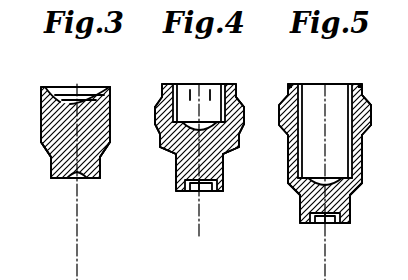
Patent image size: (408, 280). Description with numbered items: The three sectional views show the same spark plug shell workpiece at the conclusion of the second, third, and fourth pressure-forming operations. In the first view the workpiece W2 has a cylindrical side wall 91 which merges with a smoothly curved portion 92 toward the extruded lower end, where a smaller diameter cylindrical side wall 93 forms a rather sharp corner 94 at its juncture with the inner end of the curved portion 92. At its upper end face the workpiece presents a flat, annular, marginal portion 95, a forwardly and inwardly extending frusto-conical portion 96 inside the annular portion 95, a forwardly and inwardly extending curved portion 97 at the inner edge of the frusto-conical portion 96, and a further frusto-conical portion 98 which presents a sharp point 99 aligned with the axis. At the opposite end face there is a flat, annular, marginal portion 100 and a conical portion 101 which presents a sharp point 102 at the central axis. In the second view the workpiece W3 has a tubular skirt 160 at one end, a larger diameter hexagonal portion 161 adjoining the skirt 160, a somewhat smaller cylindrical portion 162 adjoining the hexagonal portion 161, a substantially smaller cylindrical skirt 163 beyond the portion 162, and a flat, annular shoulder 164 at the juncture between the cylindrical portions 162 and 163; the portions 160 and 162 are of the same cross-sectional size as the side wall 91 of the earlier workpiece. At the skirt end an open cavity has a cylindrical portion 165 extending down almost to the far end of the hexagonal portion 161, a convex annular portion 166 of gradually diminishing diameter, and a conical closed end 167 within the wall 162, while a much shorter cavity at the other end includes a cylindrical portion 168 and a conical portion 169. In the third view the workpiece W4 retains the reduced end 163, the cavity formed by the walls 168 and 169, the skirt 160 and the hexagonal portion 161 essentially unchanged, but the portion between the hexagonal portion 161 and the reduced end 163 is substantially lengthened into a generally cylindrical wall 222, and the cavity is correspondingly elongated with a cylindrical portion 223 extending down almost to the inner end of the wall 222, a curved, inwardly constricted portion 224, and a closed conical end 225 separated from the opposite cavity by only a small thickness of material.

In FIG. 3, the cylindrical side wall 91 is at (111, 128).
In FIG. 3, the smoothly curved portion 92 is at (106, 150).
In FIG. 3, the smaller diameter cylindrical side wall 93 is at (53, 176).
In FIG. 3, the sharp corner 94 is at (47, 156).
In FIG. 3, the flat annular marginal portion 95 is at (47, 86).
In FIG. 3, the frusto-conical portion 96 is at (57, 94).
In FIG. 3, the curved portion 97 is at (76, 100).
In FIG. 3, the frusto-conical portion 98 is at (96, 94).
In FIG. 3, the sharp point 99 is at (110, 88).
In FIG. 3, the flat annular marginal portion 100 is at (100, 176).
In FIG. 3, the conical portion 101 is at (70, 179).
In FIG. 3, the sharp point 102 is at (82, 180).
In FIG. 3, the workpiece W2 is at (40, 105).
In FIG. 4, the tubular skirt 160 is at (237, 86).
In FIG. 5, the tubular skirt 160 is at (363, 86).
In FIG. 4, the hexagonal portion 161 is at (244, 112).
In FIG. 5, the hexagonal portion 161 is at (371, 112).
In FIG. 4, the cylindrical portion 162 is at (224, 160).
In FIG. 4, the cylindrical skirt 163 is at (222, 185).
In FIG. 5, the cylindrical skirt 163 is at (352, 210).
In FIG. 4, the flat annular shoulder 164 is at (172, 158).
In FIG. 5, the flat annular shoulder 164 is at (356, 190).
In FIG. 4, the cylindrical portion of cavity 165 is at (185, 68).
In FIG. 4, the convex annular portion 166 is at (195, 120).
In FIG. 4, the conical closed end 167 is at (228, 88).
In FIG. 4, the cylindrical portion of cavity 168 is at (186, 190).
In FIG. 5, the cylindrical portion of cavity 168 is at (313, 224).
In FIG. 4, the conical portion of cavity 169 is at (203, 194).
In FIG. 5, the conical portion of cavity 169 is at (327, 226).
In FIG. 4, the workpiece W3 is at (158, 140).
In FIG. 5, the generally cylindrical wall 222 is at (363, 147).
In FIG. 5, the cylindrical portion of cavity 223 is at (300, 112).
In FIG. 5, the curved inwardly constricted portion 224 is at (304, 176).
In FIG. 5, the closed conical end 225 is at (316, 186).
In FIG. 5, the workpiece W4 is at (286, 188).